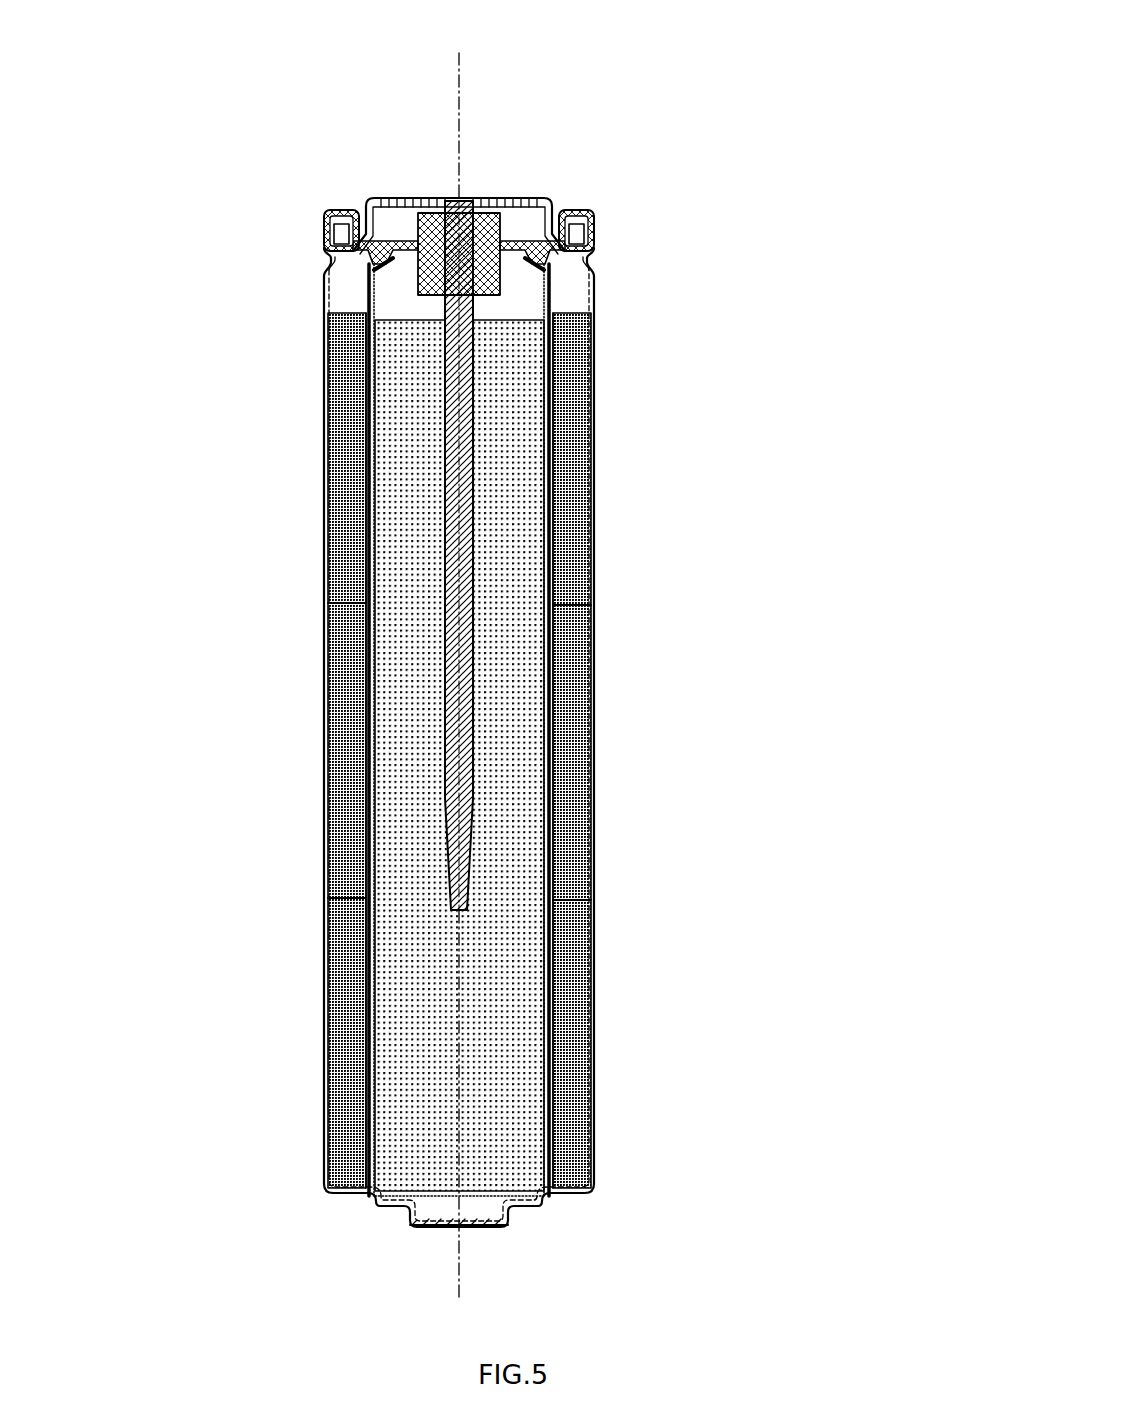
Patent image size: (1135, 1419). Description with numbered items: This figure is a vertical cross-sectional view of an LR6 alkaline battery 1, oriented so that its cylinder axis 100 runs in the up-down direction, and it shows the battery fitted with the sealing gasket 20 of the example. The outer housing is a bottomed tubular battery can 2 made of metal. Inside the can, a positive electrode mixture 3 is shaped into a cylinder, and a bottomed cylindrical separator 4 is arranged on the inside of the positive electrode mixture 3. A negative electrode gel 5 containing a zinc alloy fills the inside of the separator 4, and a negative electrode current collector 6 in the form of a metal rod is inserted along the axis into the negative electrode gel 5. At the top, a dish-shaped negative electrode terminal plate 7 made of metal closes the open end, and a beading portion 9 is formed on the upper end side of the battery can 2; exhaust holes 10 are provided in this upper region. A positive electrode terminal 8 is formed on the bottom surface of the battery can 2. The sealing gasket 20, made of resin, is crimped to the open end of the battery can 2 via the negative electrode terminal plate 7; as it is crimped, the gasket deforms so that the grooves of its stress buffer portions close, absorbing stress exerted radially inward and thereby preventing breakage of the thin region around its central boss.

The alkaline battery 1 is at (662, 58).
The battery can 2 is at (309, 283).
The positive electrode mixture 3 is at (328, 420).
The separator 4 is at (368, 362).
The negative electrode gel 5 is at (470, 1125).
The negative electrode current collector 6 is at (457, 516).
The negative electrode terminal plate 7 is at (518, 190).
The positive electrode terminal 8 is at (432, 1219).
The beading portion 9 is at (312, 251).
The exhaust holes 10 is at (348, 219).
The sealing gasket 20 is at (375, 232).
The cylinder axis 100 is at (452, 56).